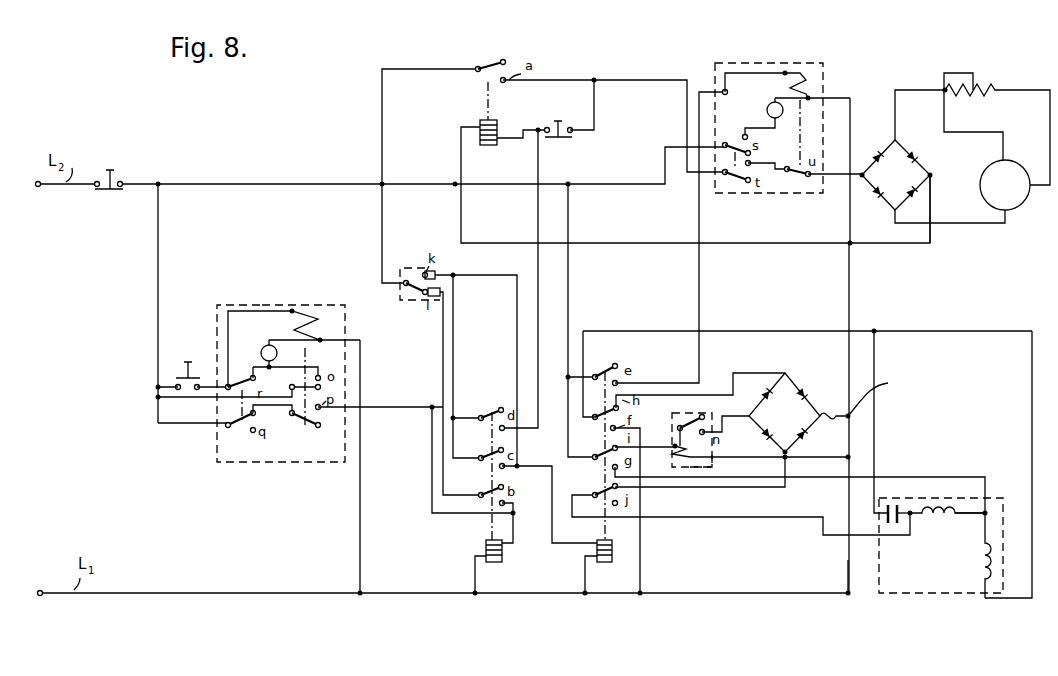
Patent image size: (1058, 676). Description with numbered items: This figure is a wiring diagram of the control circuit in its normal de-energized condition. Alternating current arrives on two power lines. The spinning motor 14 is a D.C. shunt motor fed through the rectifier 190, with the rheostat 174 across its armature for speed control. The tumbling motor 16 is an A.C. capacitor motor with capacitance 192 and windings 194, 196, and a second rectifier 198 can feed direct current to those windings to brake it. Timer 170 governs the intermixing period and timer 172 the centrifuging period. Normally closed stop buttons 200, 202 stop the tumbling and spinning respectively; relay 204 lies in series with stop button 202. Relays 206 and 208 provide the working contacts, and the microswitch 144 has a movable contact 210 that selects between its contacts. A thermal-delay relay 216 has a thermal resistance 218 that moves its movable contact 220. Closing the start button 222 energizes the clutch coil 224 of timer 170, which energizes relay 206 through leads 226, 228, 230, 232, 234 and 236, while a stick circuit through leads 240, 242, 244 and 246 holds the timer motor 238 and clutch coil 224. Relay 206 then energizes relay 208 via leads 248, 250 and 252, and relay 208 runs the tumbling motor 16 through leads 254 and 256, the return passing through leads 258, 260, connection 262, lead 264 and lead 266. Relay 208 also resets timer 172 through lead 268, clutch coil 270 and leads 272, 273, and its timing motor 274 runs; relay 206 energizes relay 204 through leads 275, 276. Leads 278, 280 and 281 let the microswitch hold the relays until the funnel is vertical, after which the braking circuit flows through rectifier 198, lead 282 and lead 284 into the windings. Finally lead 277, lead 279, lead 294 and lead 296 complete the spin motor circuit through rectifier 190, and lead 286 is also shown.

The spinning motor 14 is at (1022, 206).
The tumbling motor 16 is at (955, 596).
The microswitch 144 is at (404, 264).
The timer 170 is at (300, 464).
The timer 172 is at (805, 198).
The rheostat 174 is at (988, 87).
The rectifier 190 is at (921, 172).
The capacitance 192 is at (933, 506).
The winding 194 is at (948, 505).
The winding 196 is at (978, 563).
The rectifier 198 is at (808, 396).
The stop button 200 is at (115, 175).
The stop button 202 is at (570, 118).
The relay 204 is at (500, 127).
The relay 206 is at (502, 555).
The relay 208 is at (602, 565).
The movable contact 210 is at (410, 293).
The thermal-delay relay 216 is at (712, 470).
The thermal resistance 218 is at (683, 462).
The movable contact 220 is at (682, 424).
The start button 222 is at (187, 360).
The clutch coil 224 is at (321, 316).
The lead 226 is at (158, 274).
The lead 228 is at (191, 427).
The lead 230 is at (418, 409).
The lead 232 is at (472, 515).
The lead 234 is at (513, 530).
The lead 236 is at (475, 569).
The motor 238 is at (261, 346).
The lead 240 is at (208, 397).
The lead 242 is at (316, 367).
The lead 244 is at (360, 494).
The lead 246 is at (215, 322).
The lead 248 is at (454, 329).
The lead 250 is at (552, 480).
The lead 252 is at (590, 558).
The lead 254 is at (568, 286).
The lead 256 is at (889, 503).
The lead 258 is at (874, 423).
The lead 260 is at (1032, 407).
The connection 262 is at (878, 329).
The lead 264 is at (765, 331).
The lead 266 is at (640, 541).
The lead 268 is at (699, 270).
The clutch coil 270 is at (800, 65).
The lead 272 is at (850, 116).
The lead 273 is at (847, 578).
The timing motor 274 is at (767, 108).
The lead 275 is at (538, 329).
The lead 276 is at (656, 243).
The lead 277 is at (382, 119).
The lead 278 is at (382, 215).
The lead 279 is at (631, 80).
The lead 280 is at (443, 374).
The lead 281 is at (489, 276).
The lead 282 is at (734, 487).
The lead 284 is at (762, 373).
The conductor 286 is at (881, 392).
The lead 294 is at (848, 174).
The lead 296 is at (921, 246).